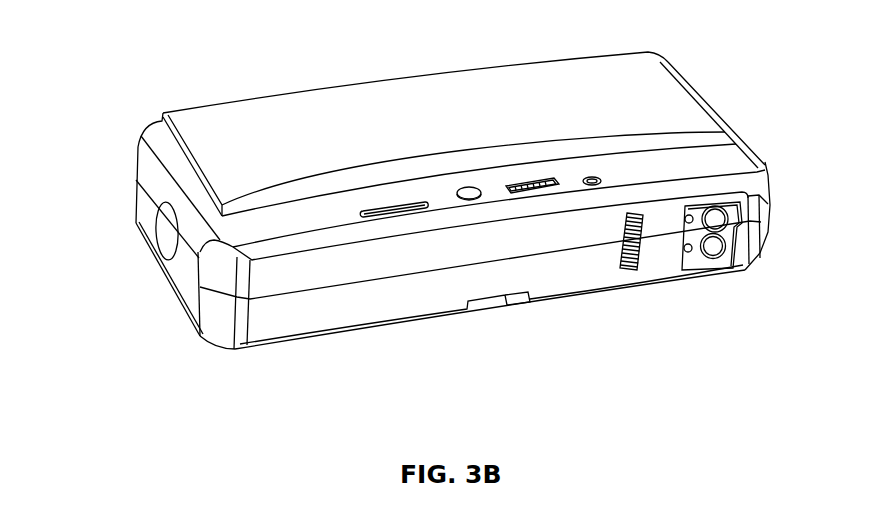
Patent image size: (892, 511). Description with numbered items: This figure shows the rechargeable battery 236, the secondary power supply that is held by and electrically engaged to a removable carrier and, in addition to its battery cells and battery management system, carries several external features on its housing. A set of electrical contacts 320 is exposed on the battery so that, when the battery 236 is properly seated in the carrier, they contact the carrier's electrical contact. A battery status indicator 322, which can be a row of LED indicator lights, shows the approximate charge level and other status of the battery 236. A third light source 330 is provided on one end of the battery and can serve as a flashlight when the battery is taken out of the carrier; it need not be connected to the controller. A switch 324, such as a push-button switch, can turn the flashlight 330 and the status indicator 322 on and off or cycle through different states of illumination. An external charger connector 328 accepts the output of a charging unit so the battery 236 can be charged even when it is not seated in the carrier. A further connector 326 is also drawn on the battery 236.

The rechargeable battery 236 is at (412, 76).
The set of electrical contacts 320 is at (632, 268).
The battery status indicator 322 is at (374, 196).
The switch 324 is at (458, 196).
The port 326 is at (535, 196).
The external charger connector 328 is at (592, 176).
The third light source 330 is at (166, 233).